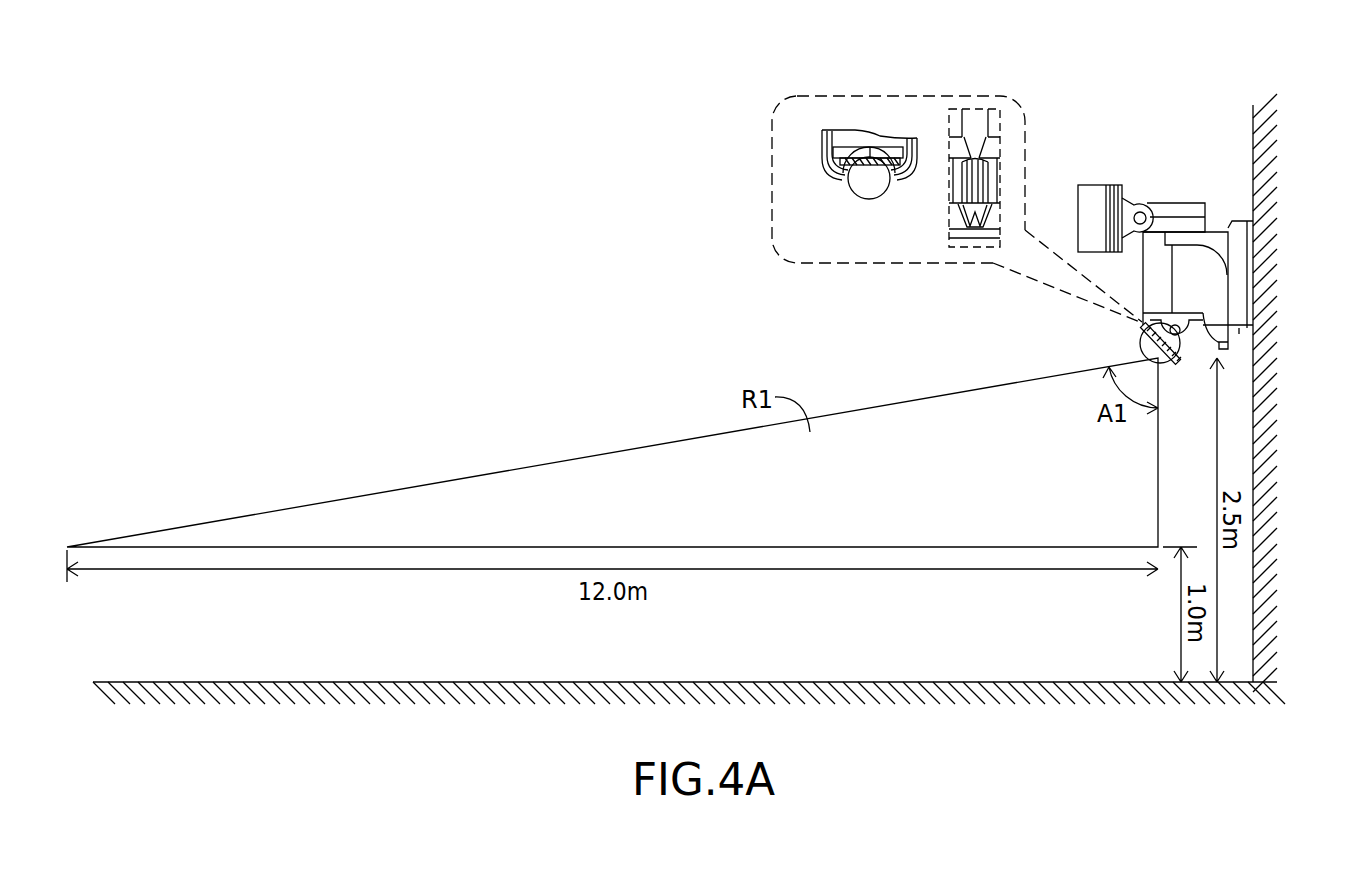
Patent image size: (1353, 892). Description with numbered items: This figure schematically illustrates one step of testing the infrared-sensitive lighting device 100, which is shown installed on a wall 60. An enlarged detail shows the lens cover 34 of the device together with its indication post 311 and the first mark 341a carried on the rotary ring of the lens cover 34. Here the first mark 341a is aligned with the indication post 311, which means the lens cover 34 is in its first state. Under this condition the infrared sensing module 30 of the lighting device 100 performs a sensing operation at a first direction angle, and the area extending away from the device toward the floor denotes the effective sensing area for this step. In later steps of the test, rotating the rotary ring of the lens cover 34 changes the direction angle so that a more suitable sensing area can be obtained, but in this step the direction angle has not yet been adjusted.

The infrared-sensitive lighting device 100 is at (1150, 174).
The wall 60 is at (1265, 275).
The infrared sensing module 30 is at (1148, 347).
The lens cover 34 is at (865, 182).
The indication post 311 is at (975, 120).
The first mark 341a is at (972, 198).